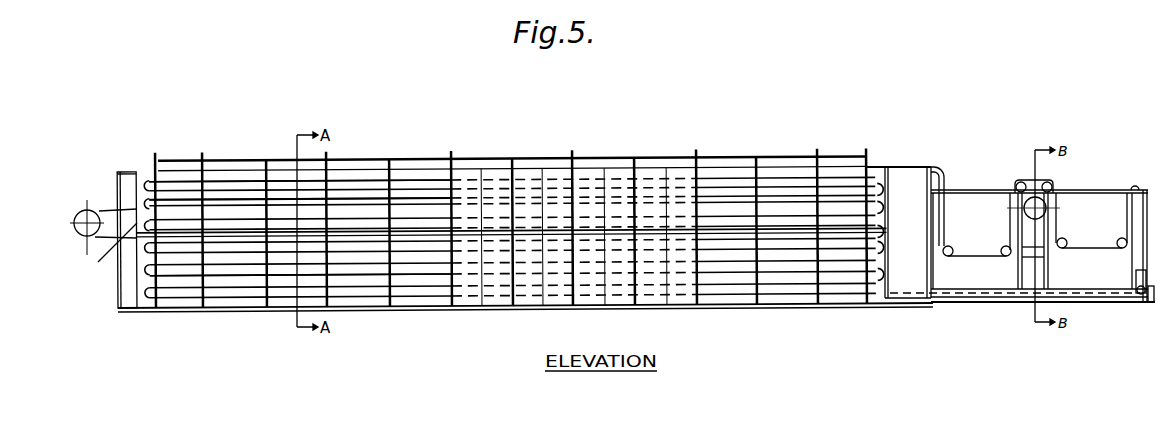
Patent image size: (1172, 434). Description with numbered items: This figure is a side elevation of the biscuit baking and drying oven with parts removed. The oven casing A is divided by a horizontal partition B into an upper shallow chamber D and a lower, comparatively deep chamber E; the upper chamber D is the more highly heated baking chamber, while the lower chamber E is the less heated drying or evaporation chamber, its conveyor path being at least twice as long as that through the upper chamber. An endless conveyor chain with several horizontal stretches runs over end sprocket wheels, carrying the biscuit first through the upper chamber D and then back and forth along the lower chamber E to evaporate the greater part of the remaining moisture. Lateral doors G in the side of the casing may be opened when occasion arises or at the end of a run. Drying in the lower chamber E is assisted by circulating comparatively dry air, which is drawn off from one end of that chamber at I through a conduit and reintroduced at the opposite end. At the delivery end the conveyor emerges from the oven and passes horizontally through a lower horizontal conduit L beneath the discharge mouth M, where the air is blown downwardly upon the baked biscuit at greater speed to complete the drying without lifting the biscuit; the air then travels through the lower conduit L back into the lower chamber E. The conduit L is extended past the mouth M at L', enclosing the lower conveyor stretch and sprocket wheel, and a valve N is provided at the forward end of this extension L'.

The oven casing A is at (725, 157).
The horizontal partition B is at (168, 205).
The upper chamber D is at (240, 192).
The lower chamber E is at (230, 272).
The lateral doors G is at (592, 178).
The air draw-off point I is at (108, 260).
The lower horizontal conduit L is at (1022, 263).
The conduit extension L' is at (1122, 261).
The discharge mouth M is at (1045, 272).
The valve N is at (1135, 305).